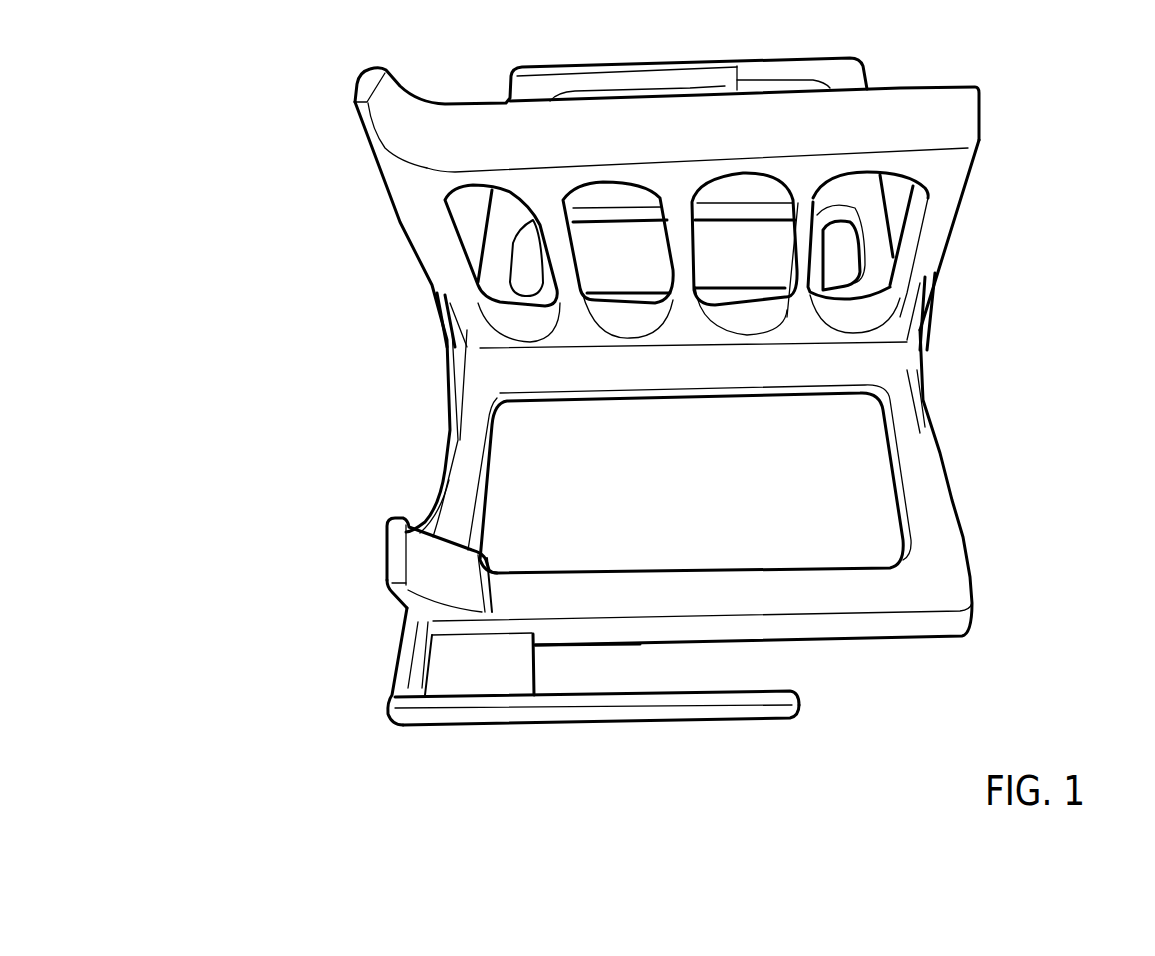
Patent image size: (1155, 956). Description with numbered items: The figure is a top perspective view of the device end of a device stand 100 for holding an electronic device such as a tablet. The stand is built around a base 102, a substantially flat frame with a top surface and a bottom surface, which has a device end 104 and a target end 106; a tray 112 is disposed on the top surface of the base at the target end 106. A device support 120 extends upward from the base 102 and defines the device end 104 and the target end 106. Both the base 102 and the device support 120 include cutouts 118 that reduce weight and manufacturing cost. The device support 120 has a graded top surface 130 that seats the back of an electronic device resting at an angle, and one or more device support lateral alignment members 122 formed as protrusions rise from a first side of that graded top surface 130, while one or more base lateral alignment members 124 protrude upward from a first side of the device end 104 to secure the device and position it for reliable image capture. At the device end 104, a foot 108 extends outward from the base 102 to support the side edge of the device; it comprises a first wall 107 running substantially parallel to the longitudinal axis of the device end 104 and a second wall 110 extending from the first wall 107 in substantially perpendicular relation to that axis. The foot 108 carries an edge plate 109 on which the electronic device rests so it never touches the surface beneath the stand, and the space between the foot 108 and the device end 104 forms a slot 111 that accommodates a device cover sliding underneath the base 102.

The device stand 100 is at (285, 673).
The base 102 is at (847, 640).
The device end 104 is at (943, 578).
The target end 106 is at (843, 64).
The first wall 107 is at (390, 667).
The foot 108 is at (642, 712).
The edge plate 109 is at (471, 672).
The second wall 110 is at (578, 710).
The slot 111 is at (697, 668).
The tray 112 is at (523, 88).
The cutouts 118 is at (465, 212).
The device support 120 is at (953, 208).
The device support lateral alignment member 122 is at (357, 103).
The base lateral alignment member 124 is at (383, 558).
The graded top surface 130 is at (963, 108).